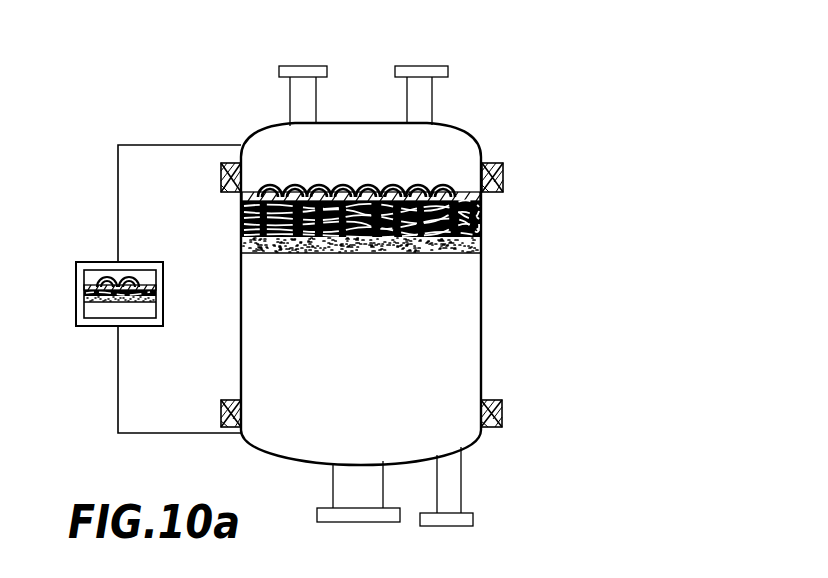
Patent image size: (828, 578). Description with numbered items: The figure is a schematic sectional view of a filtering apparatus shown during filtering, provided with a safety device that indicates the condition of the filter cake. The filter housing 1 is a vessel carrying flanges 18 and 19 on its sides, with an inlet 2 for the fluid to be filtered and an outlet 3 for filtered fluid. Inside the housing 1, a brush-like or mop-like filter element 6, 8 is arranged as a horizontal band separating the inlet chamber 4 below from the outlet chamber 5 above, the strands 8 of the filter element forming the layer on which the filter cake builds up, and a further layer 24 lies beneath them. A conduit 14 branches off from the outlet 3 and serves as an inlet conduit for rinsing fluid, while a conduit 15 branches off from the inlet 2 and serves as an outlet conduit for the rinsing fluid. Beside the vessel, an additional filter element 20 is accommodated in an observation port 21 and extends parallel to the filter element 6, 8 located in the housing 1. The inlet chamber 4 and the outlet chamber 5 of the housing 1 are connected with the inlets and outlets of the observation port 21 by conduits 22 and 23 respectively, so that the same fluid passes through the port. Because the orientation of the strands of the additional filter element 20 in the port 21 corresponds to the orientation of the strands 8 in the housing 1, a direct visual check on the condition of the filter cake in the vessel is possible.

The filter housing 1 is at (378, 297).
The inlet 2 is at (453, 521).
The outlet 3 is at (450, 72).
The inlet chamber 4 is at (291, 445).
The outlet chamber 5 is at (466, 146).
The filter element 6 is at (481, 203).
The strands 8 is at (482, 232).
The conduit 14 is at (287, 72).
The conduit 15 is at (355, 514).
The flange 18 is at (504, 178).
The flange 19 is at (502, 414).
The filter element 20 is at (92, 303).
The observation port 21 is at (92, 310).
The conduit 22 is at (116, 402).
The conduit 23 is at (116, 187).
The granular bottom layer 24 is at (483, 257).